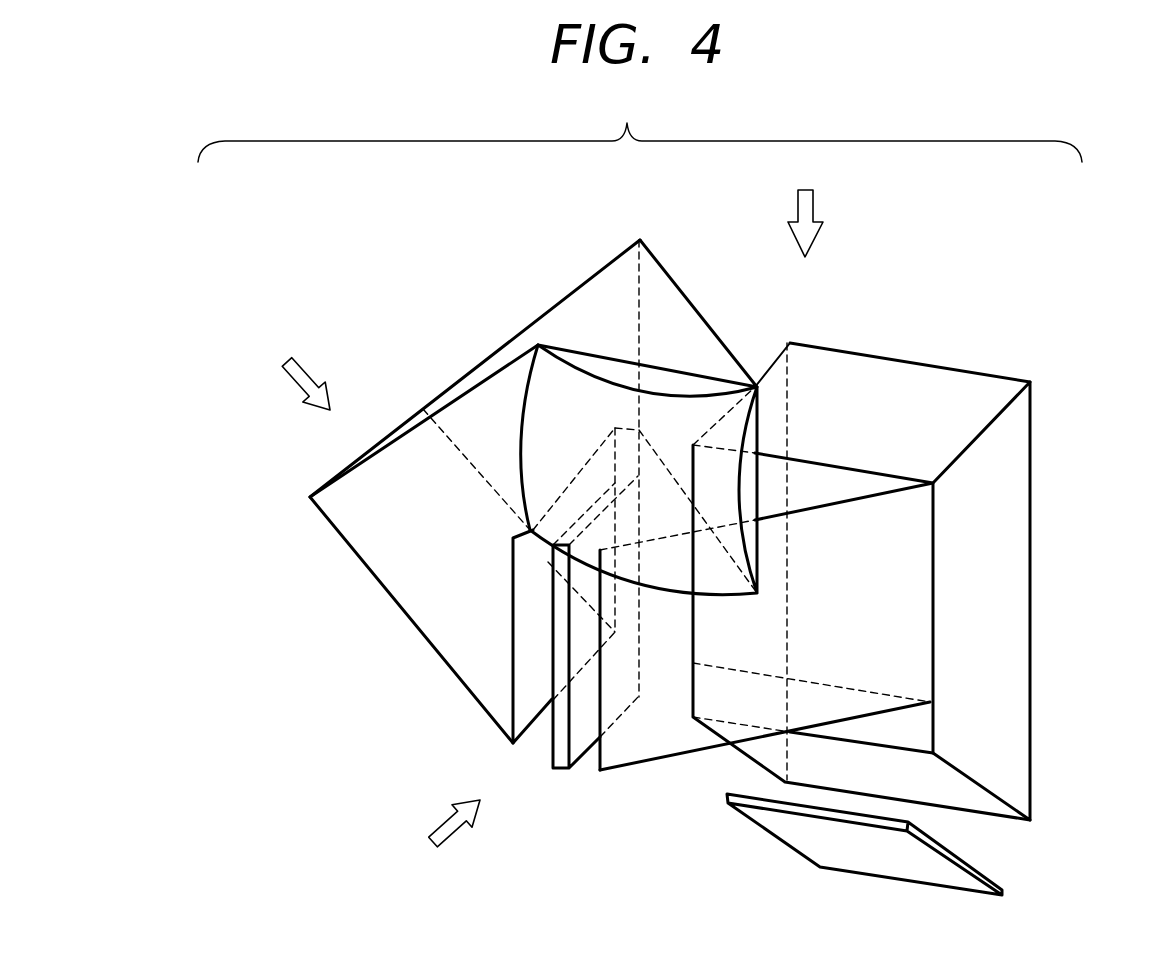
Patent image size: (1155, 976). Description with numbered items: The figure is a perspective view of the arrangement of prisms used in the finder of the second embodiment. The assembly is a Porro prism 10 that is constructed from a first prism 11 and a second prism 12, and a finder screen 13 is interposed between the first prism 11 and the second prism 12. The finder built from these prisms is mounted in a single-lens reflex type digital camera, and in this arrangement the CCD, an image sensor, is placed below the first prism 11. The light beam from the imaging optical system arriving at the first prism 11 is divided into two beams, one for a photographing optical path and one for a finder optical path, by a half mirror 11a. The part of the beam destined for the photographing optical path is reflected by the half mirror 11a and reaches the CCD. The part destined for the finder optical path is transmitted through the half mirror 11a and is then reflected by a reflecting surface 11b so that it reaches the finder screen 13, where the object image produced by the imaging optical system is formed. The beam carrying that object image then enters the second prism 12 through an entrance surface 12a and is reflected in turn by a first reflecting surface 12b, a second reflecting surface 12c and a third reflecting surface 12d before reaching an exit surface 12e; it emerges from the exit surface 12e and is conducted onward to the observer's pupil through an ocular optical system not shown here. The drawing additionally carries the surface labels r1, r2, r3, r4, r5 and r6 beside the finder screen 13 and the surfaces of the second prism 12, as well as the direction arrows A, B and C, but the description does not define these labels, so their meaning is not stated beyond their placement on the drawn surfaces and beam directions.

The Porro prism 10 is at (640, 128).
The first prism 11 is at (869, 581).
The half mirror 11a is at (993, 540).
The reflecting surface 11b is at (862, 532).
The second prism 12 is at (548, 474).
The entrance surface 12a is at (475, 585).
The first reflecting surface 12b is at (392, 544).
The second reflecting surface 12c is at (475, 385).
The third reflecting surface 12d is at (658, 462).
The exit surface 12e is at (685, 445).
The finder screen 13 is at (558, 657).
The surface of plate 13 r1 is at (552, 720).
The surface 12a r2 is at (520, 660).
The surface 12b r3 is at (398, 600).
The surface 12c r4 is at (457, 386).
The surface 12d r5 is at (672, 310).
The surface 12e r6 is at (687, 407).
The direction A is at (447, 839).
The direction B is at (302, 367).
The direction C is at (805, 207).
The element CCD is at (802, 850).